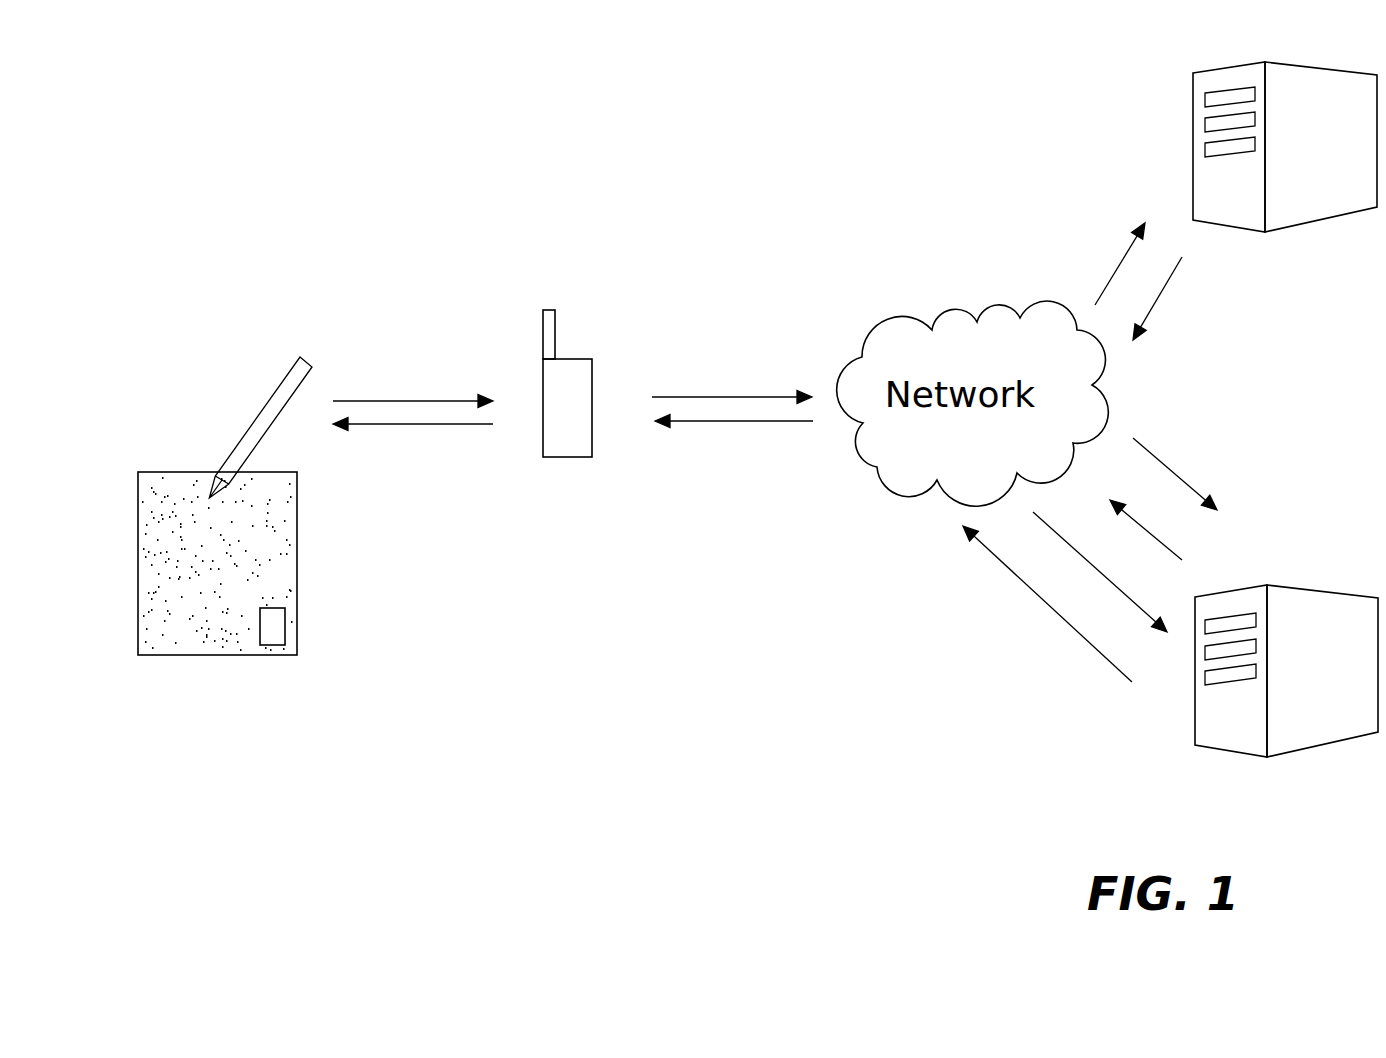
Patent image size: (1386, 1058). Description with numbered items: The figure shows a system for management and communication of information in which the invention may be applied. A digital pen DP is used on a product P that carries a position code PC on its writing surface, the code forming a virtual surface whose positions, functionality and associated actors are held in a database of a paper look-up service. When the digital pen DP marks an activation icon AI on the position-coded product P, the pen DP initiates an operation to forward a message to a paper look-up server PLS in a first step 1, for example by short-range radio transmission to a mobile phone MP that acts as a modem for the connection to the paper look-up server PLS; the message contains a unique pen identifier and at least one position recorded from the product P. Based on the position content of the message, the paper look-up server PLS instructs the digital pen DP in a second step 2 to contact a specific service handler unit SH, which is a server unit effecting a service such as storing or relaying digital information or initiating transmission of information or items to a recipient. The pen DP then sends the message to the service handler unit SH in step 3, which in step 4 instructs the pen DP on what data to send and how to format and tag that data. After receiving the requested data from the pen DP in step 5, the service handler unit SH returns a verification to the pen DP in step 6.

The product P is at (163, 470).
The position code PC is at (163, 630).
The activation icon AI is at (285, 618).
The digital pen DP is at (283, 393).
The mobile phone MP is at (578, 372).
The paper look-up server PLS is at (1303, 207).
The service handler unit SH is at (1315, 730).
The step of forwarding a message to the paper look-up server 1 is at (1114, 264).
The step of instructing the pen to contact a service handler 2 is at (1151, 298).
The step of sending the message to the service handler 3 is at (1175, 468).
The step of instructing the pen on data to send 4 is at (1146, 523).
The step of sending requested data 5 is at (1100, 572).
The step of returning a verification 6 is at (1047, 604).